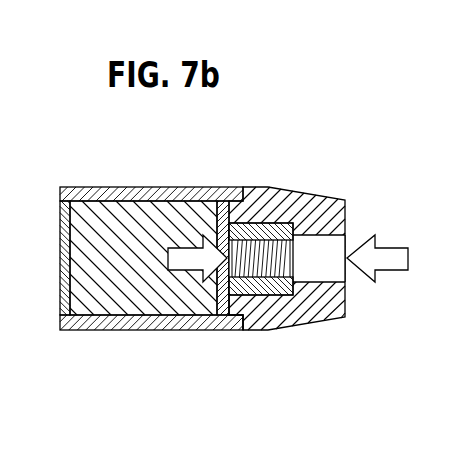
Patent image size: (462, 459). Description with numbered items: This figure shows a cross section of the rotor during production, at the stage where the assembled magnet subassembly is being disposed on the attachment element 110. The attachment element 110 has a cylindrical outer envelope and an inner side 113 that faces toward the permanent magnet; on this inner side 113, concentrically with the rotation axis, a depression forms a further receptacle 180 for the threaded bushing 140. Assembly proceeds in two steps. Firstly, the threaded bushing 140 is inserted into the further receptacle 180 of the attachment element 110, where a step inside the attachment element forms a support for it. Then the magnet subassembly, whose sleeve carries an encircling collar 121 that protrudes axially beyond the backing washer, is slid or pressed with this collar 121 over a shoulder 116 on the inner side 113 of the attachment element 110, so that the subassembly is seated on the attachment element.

The attachment element 110 is at (317, 303).
The inner side 113 is at (228, 307).
The shoulder 116 is at (238, 305).
The encircling collar 121 is at (243, 198).
The threaded bushing 140 is at (263, 223).
The further receptacle 180 is at (293, 240).